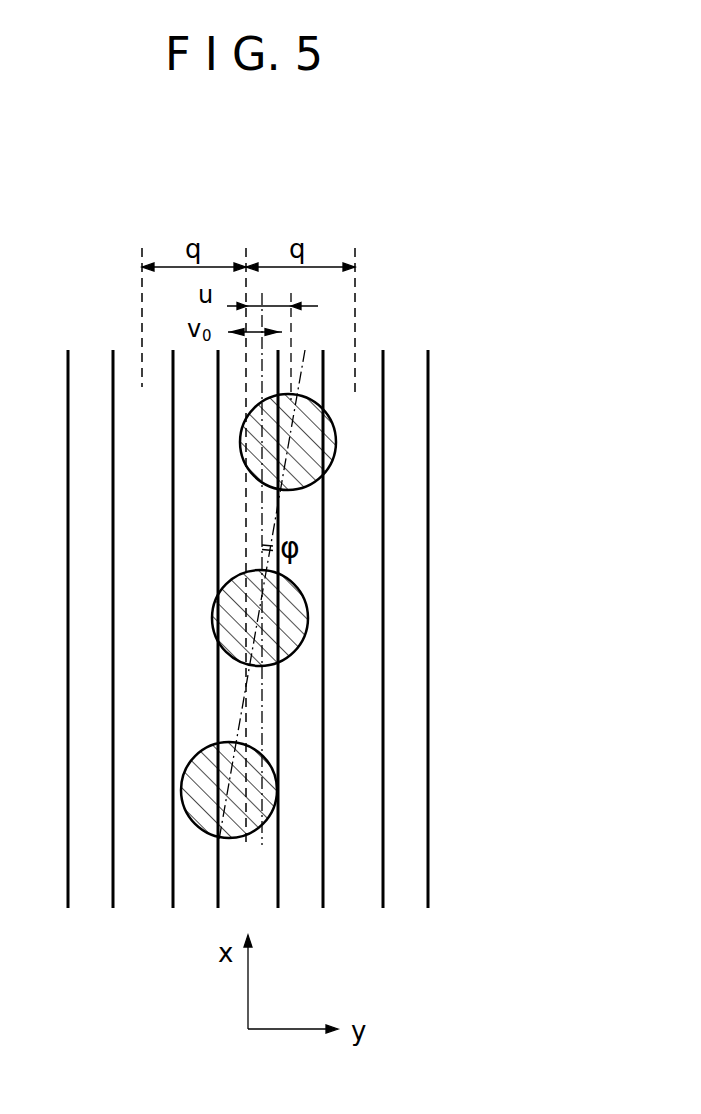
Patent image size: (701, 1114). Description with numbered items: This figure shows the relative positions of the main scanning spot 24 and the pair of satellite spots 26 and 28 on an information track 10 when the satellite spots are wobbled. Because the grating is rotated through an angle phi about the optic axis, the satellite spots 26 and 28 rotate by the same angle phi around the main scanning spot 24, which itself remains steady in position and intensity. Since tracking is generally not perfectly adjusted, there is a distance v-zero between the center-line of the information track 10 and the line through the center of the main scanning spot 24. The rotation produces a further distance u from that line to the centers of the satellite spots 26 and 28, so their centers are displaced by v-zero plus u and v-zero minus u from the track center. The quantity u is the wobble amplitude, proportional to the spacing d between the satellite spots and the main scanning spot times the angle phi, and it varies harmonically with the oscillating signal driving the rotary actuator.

The information track 10 is at (142, 248).
The main scanning spot 24 is at (303, 602).
The satellite spot 26 is at (362, 443).
The satellite spot 28 is at (270, 768).